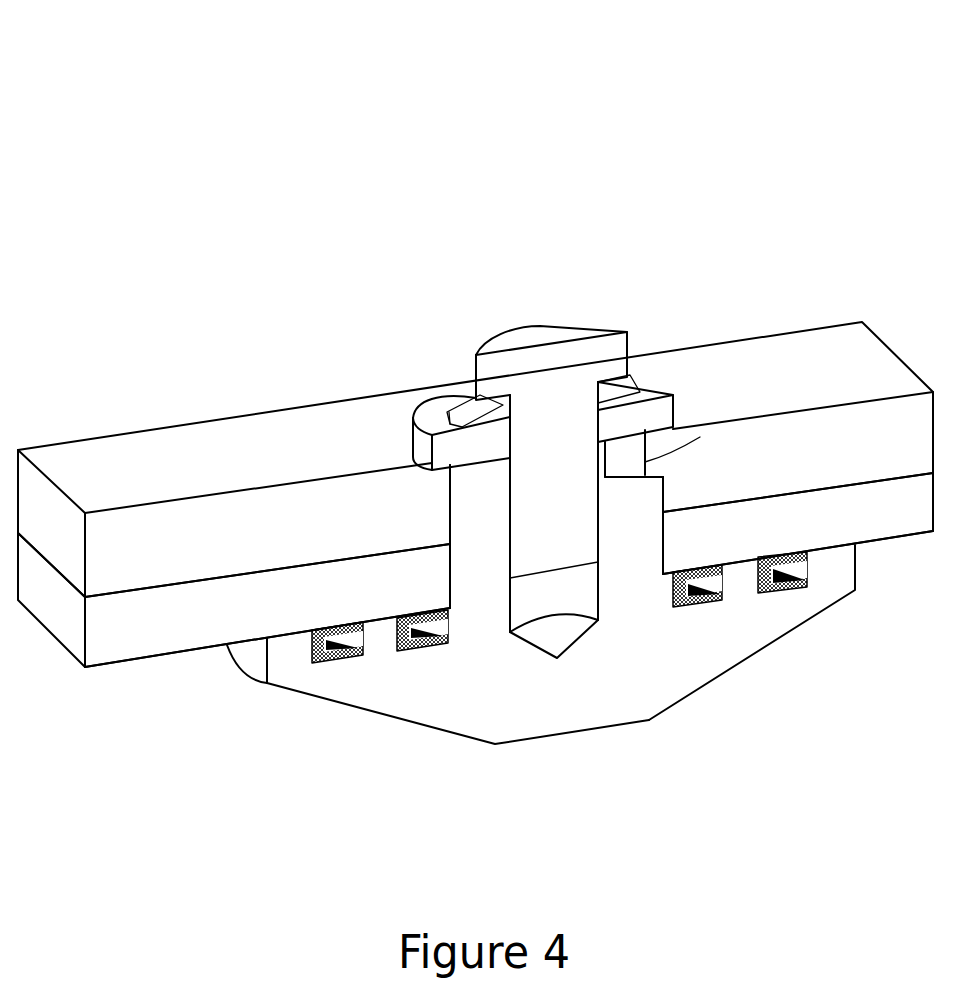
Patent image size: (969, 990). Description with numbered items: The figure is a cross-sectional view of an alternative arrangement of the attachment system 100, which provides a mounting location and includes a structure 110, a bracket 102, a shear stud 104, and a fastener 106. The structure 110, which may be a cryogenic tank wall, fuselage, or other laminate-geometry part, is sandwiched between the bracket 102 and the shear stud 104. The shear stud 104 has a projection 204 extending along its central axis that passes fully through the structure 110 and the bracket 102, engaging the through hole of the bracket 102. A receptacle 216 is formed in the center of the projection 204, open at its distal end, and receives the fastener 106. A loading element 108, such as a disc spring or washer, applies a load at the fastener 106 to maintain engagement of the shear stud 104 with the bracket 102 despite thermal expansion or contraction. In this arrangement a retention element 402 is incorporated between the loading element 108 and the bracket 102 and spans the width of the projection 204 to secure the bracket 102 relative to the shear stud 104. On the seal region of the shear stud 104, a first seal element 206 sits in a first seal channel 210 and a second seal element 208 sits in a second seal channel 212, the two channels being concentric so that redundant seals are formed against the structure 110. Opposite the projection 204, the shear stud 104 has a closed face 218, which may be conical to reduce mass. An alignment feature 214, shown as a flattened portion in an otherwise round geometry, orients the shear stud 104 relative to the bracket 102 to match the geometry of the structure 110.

The attachment system 100 is at (158, 77).
The bracket 102 is at (232, 420).
The shear stud 104 is at (667, 710).
The fastener 106 is at (517, 328).
The loading element 108 is at (458, 392).
The structure 110 is at (152, 657).
The projection 204 is at (448, 530).
The first seal element 206 is at (332, 662).
The second seal element 208 is at (398, 650).
The first seal channel 210 is at (810, 570).
The second seal channel 212 is at (722, 583).
The alignment feature 214 is at (648, 458).
The receptacle 216 is at (587, 640).
The closed face 218 is at (503, 745).
The retention element 402 is at (660, 393).